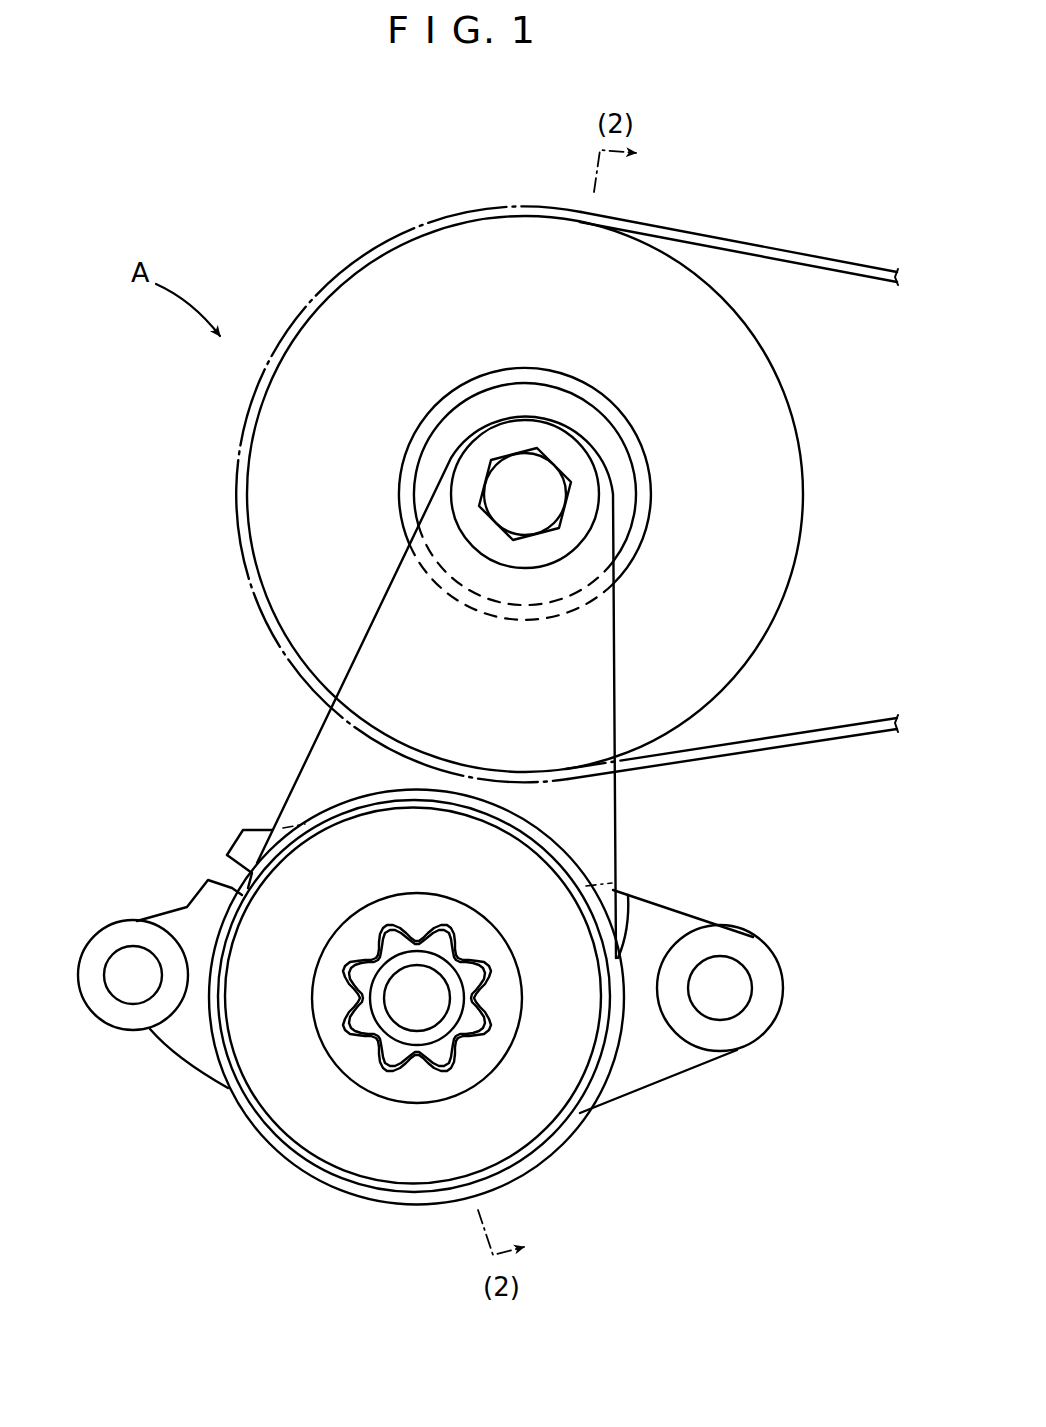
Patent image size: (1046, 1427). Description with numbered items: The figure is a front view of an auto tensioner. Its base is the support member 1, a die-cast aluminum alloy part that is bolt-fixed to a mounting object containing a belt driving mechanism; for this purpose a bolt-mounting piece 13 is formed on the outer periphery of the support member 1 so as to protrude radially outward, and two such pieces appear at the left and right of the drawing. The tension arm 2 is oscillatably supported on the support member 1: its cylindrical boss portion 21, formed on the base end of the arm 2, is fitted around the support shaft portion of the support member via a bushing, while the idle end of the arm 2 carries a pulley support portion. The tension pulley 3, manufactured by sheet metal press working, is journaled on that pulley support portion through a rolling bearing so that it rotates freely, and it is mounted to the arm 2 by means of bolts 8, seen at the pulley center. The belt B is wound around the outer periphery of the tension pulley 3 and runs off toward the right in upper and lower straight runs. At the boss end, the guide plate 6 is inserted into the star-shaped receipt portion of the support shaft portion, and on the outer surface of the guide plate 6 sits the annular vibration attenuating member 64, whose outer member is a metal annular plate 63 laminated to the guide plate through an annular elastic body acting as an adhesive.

The support member 1 is at (430, 994).
The tension arm 2 is at (620, 731).
The tension pulley 3 is at (768, 357).
The guide plate 6 is at (377, 1088).
The bolts 8 is at (548, 497).
The bolt-mounting piece 13 is at (185, 1037).
The boss portion 21 is at (416, 1030).
The annular plate 63 is at (415, 1140).
The vibration attenuating member 64 is at (438, 1158).
The belt B is at (728, 237).